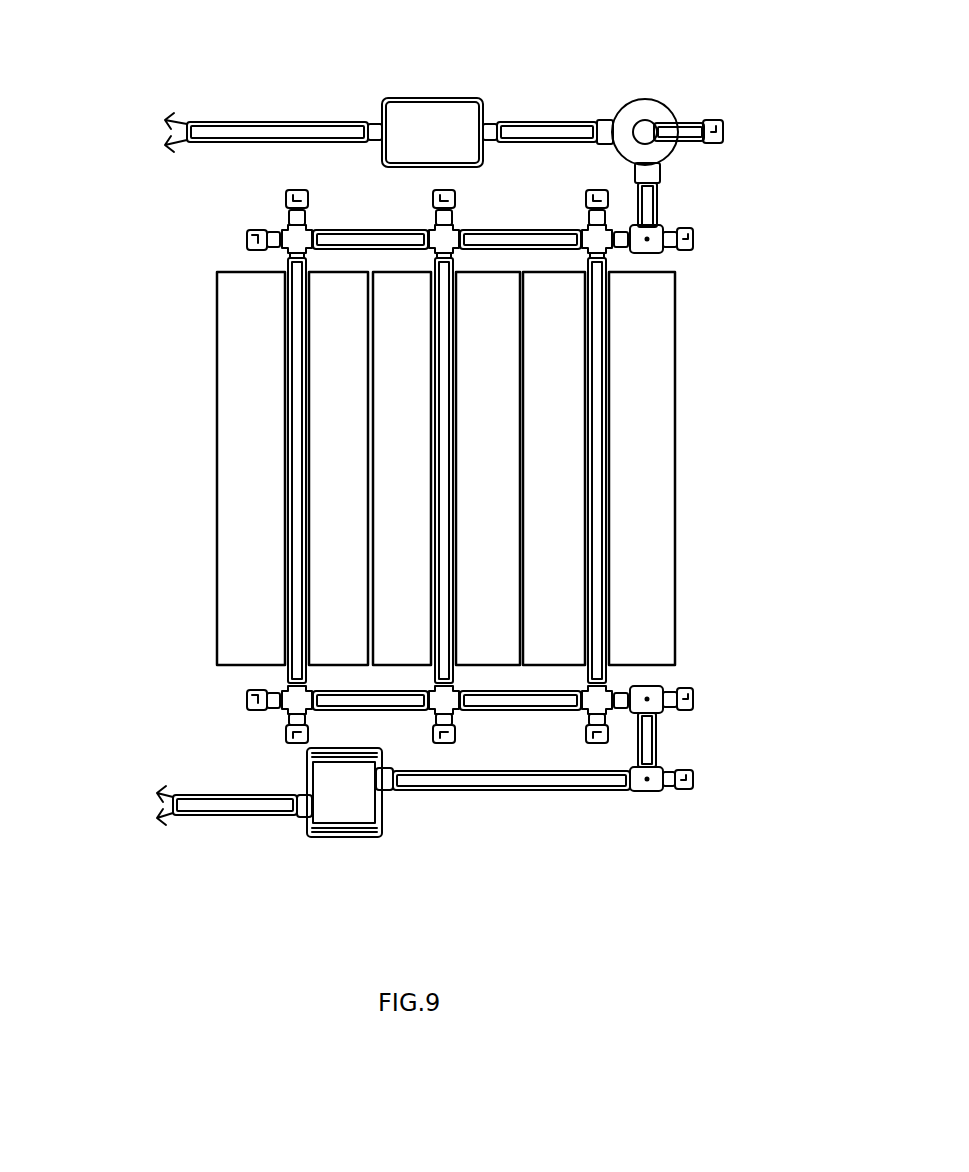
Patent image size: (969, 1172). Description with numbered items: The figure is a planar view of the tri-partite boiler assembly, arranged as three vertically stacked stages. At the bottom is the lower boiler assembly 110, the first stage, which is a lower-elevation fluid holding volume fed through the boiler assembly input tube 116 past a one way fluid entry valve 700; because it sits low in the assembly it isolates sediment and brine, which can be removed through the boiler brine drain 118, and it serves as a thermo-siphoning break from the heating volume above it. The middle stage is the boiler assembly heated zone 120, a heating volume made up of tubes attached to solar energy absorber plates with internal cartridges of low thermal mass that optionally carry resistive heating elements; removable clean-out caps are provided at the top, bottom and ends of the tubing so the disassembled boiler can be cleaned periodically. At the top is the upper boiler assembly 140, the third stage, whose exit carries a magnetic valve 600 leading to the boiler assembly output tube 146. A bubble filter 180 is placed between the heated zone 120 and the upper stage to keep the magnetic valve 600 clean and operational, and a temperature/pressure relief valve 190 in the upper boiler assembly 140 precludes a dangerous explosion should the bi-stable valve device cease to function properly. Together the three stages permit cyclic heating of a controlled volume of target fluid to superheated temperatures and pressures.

The upper boiler assembly 140 is at (152, 50).
The boiler assembly heated zone 120 is at (155, 272).
The lower boiler assembly 110 is at (153, 685).
The boiler assembly output tube 146 is at (287, 126).
The magnetic valve 600 is at (402, 108).
The bubble filter 180 is at (628, 110).
The temperature/pressure relief valve 190 is at (713, 121).
The one way fluid entry valve 700 is at (378, 810).
The boiler assembly input tube 116 is at (229, 812).
The boiler brine drain 118 is at (683, 790).